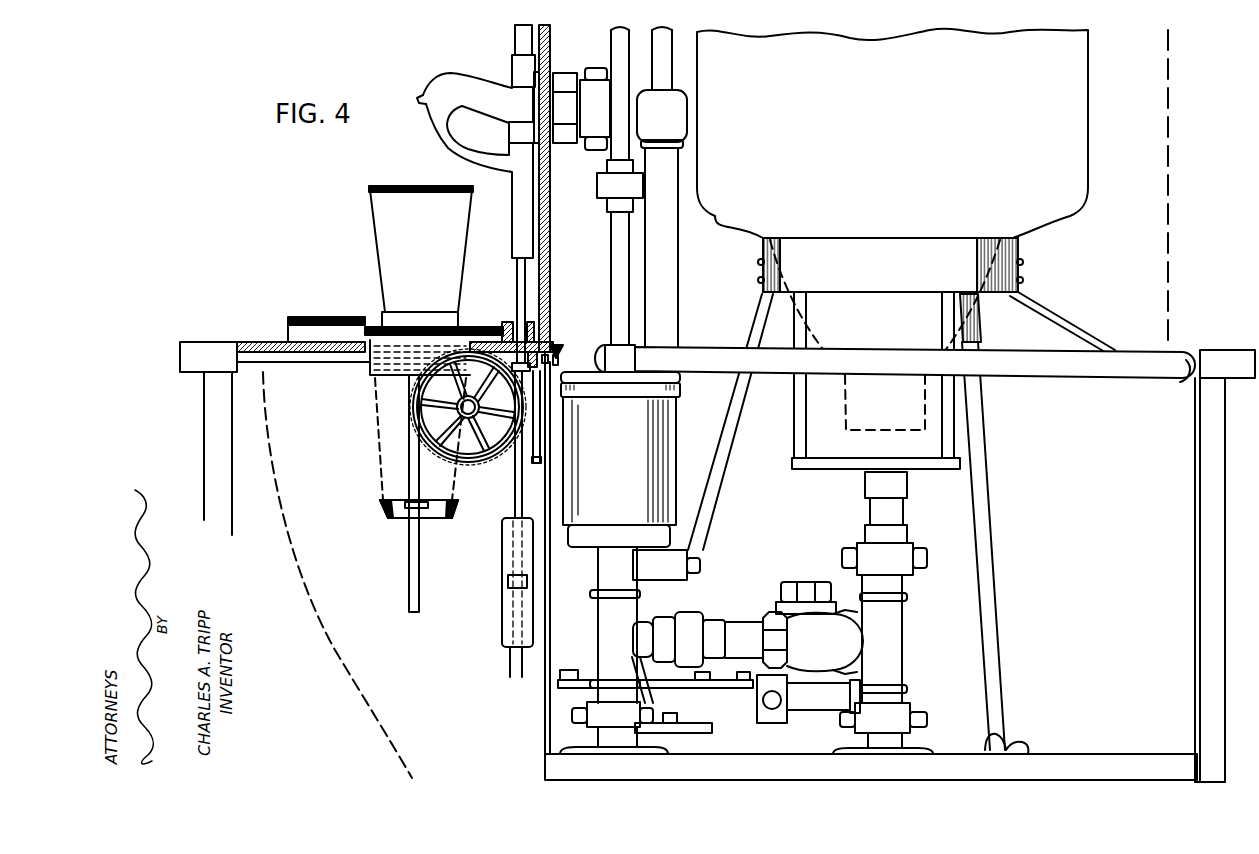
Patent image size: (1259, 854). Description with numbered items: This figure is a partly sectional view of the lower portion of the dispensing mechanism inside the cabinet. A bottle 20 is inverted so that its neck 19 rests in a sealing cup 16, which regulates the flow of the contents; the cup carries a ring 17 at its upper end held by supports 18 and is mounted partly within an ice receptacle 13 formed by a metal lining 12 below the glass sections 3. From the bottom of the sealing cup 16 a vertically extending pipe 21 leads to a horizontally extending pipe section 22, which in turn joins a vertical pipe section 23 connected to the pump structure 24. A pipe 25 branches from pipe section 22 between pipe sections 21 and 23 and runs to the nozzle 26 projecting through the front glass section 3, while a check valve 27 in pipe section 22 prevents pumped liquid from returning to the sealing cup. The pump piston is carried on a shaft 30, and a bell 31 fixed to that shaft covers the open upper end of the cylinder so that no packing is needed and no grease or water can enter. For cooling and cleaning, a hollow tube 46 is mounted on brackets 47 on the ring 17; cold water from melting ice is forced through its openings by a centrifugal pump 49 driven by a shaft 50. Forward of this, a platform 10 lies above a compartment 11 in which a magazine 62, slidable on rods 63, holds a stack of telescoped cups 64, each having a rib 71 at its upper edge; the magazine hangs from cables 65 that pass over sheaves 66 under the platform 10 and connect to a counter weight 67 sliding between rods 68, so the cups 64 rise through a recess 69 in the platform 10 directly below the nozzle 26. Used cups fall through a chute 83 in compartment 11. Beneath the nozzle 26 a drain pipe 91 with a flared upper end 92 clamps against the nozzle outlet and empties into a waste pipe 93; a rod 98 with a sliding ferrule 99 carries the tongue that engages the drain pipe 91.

The glass section 3 is at (550, 200).
The platform 10 is at (243, 342).
The compartment 11 is at (236, 453).
The metal lining 12 is at (1195, 568).
The ice receptacle 13 is at (1176, 455).
The sealing cup 16 is at (975, 338).
The ring 17 is at (1020, 252).
The supports 18 is at (985, 510).
The neck 19 is at (845, 408).
The bottle 20 is at (1088, 122).
The vertically extending pipe 21 is at (903, 612).
The horizontally extending pipe section 22 is at (734, 628).
The vertical pipe section 23 is at (600, 638).
The pump structure 24 is at (670, 497).
The pipe 25 is at (679, 303).
The nozzle 26 is at (462, 73).
The check valve 27 is at (845, 646).
The shaft 30 is at (613, 284).
The bell 31 is at (610, 460).
The hollow tube 46 is at (1038, 377).
The brackets 47 is at (1100, 333).
The centrifugal pump 49 is at (700, 722).
The shaft 50 is at (672, 72).
The magazine 62 is at (392, 517).
The rods 63 is at (409, 590).
The cups 64 is at (381, 240).
The cables 65 is at (512, 507).
The sheaves 66 is at (470, 463).
The counter weight 67 is at (503, 604).
The rods 68 is at (511, 668).
The recess 69 is at (372, 357).
The rib 71 is at (375, 190).
The chute 83 is at (291, 567).
The drain pipe 91 is at (470, 151).
The flared upper end 92 is at (430, 110).
The waste pipe 93 is at (551, 423).
The rod 98 is at (515, 40).
The ferrule 99 is at (513, 80).